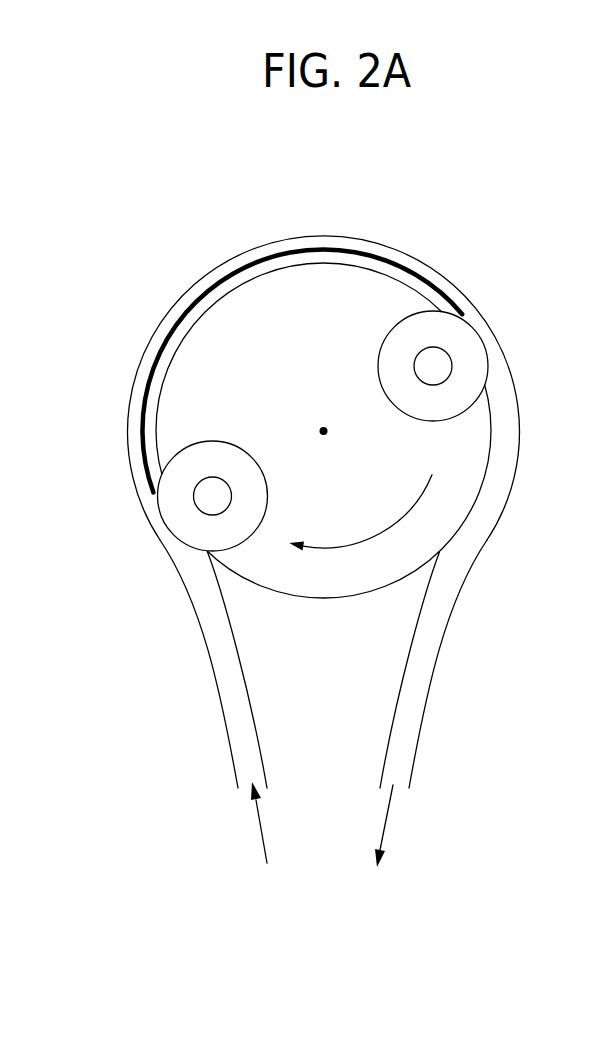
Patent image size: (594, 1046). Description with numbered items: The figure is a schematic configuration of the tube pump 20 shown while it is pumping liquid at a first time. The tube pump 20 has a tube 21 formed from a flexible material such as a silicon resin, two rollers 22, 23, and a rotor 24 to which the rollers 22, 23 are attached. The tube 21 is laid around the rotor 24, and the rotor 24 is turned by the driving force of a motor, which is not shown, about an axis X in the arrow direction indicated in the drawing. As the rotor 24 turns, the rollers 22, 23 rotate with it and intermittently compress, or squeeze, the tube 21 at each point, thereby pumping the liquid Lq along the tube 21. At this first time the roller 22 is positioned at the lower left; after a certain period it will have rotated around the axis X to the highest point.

The tube pump 20 is at (478, 211).
The tube 21 is at (495, 530).
The roller 22 is at (180, 520).
The roller 23 is at (470, 345).
The rotor 24 is at (193, 377).
The liquid Lq is at (230, 270).
The axis X is at (323, 431).